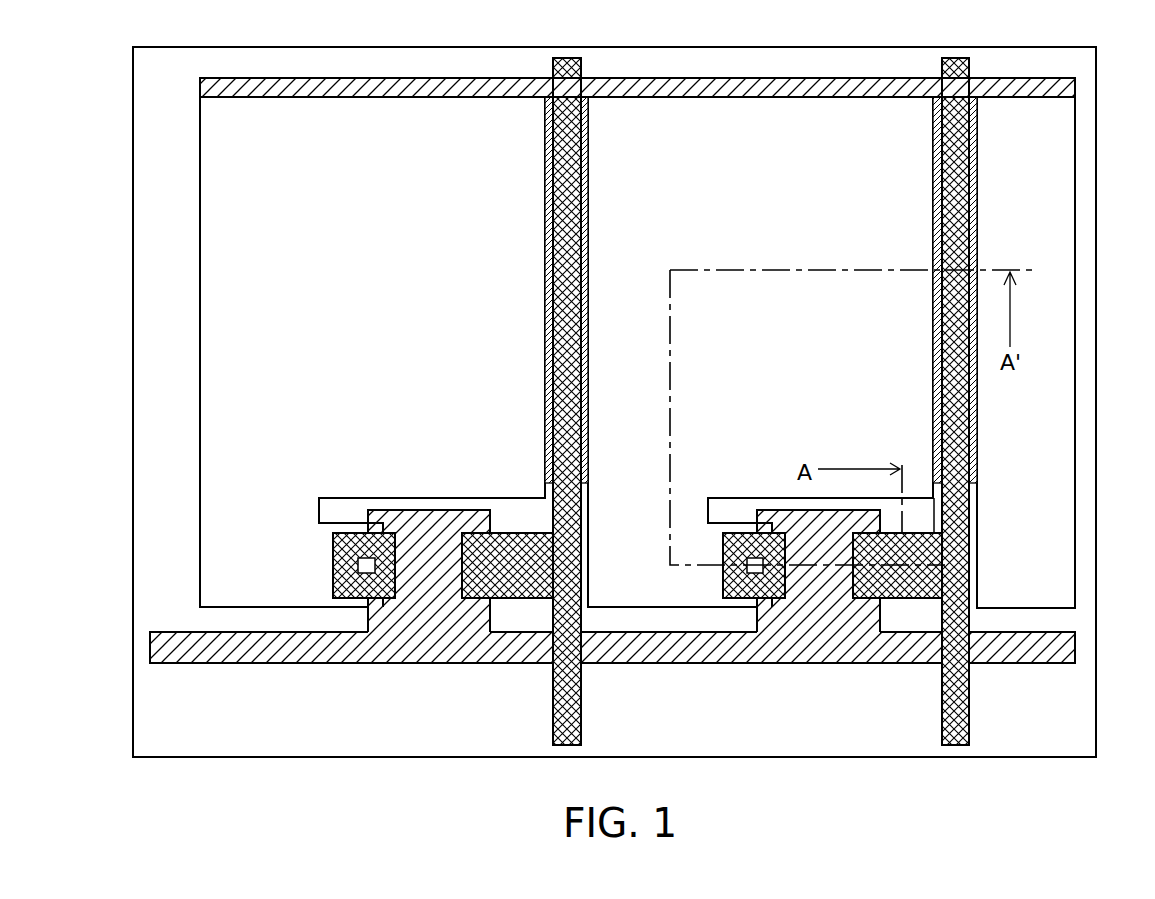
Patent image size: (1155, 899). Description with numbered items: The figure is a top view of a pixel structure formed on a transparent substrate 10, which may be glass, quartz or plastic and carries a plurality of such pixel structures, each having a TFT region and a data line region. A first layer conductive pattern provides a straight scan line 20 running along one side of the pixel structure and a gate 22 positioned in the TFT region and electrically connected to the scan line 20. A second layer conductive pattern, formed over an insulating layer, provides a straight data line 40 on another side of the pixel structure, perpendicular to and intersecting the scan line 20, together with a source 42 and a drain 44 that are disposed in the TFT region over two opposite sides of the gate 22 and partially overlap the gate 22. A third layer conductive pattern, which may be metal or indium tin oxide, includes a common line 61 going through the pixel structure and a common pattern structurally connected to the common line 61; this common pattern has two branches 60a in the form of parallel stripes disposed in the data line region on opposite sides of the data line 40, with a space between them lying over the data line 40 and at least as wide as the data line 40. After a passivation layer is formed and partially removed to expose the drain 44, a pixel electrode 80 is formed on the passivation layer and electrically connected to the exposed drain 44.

The substrate 10 is at (1052, 47).
The scan line 20 is at (645, 650).
The gate 22 is at (812, 595).
The data line 40 is at (968, 133).
The source 42 is at (905, 598).
The drain 44 is at (735, 598).
The branches 60a is at (1013, 18).
The common line 61 is at (477, 95).
The pixel electrode 80 is at (719, 103).